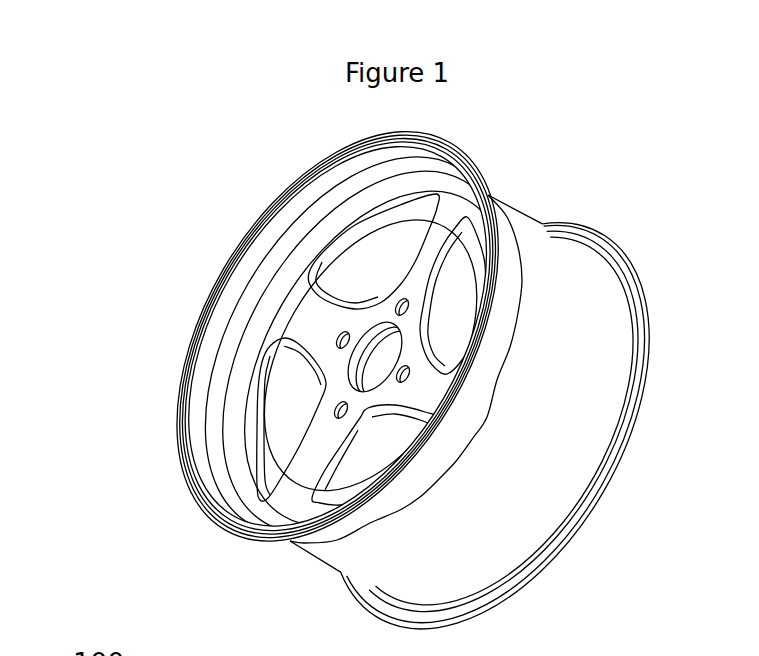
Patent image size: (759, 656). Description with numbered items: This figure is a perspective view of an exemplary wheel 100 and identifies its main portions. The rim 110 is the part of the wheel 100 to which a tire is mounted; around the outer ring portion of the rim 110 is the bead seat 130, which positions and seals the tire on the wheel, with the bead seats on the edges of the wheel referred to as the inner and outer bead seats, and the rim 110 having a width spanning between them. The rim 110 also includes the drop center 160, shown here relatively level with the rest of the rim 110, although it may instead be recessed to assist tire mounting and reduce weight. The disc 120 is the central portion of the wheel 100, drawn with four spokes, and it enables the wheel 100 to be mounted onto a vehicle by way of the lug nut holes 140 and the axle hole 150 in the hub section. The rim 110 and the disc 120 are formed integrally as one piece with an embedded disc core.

The wheel 100 is at (379, 352).
The rim 110 is at (550, 382).
The disc 120 is at (365, 297).
The bead seat 130 is at (563, 421).
The lug nut holes 140 is at (288, 314).
The axle hole 150 is at (274, 432).
The drop center 160 is at (390, 336).